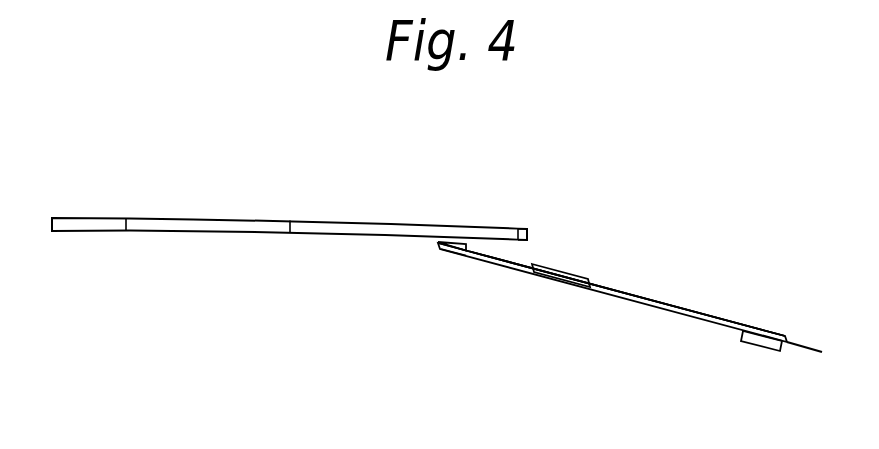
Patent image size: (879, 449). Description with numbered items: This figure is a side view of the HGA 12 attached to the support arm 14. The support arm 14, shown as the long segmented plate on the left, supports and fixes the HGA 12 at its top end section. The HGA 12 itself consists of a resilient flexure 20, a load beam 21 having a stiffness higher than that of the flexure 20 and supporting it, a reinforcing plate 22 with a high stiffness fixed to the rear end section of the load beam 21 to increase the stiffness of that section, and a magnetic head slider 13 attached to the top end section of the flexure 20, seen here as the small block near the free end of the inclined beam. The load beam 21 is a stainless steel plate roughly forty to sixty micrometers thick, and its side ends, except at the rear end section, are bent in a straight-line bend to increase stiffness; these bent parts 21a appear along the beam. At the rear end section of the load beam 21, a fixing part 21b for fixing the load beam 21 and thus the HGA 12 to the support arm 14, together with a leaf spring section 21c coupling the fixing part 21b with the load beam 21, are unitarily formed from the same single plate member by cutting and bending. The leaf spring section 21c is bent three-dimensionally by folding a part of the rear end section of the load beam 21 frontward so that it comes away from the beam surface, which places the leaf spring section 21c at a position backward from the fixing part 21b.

The HGA 12 is at (662, 244).
The magnetic head slider 13 is at (767, 348).
The support arm 14 is at (380, 224).
The resilient flexure 20 is at (730, 329).
The load beam 21 is at (601, 284).
The bent parts 21a is at (637, 301).
The fixing part 21b is at (503, 243).
The leaf spring section 21c is at (462, 253).
The reinforcing plate 22 is at (479, 259).